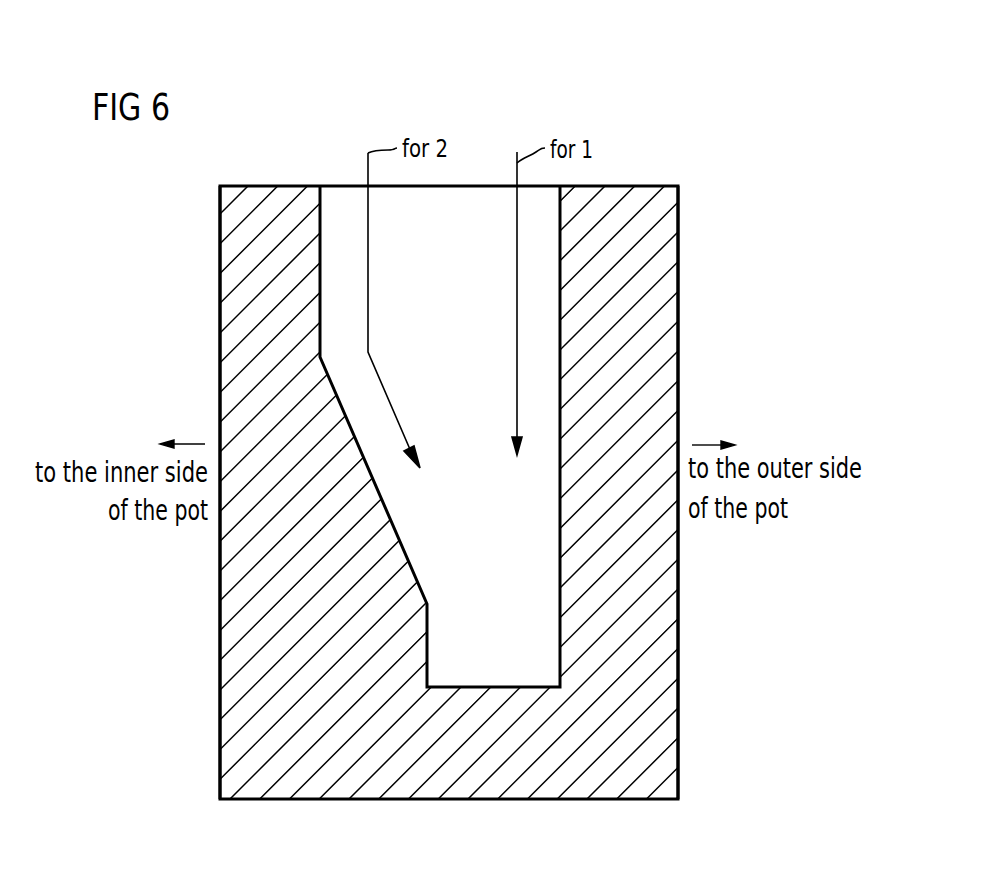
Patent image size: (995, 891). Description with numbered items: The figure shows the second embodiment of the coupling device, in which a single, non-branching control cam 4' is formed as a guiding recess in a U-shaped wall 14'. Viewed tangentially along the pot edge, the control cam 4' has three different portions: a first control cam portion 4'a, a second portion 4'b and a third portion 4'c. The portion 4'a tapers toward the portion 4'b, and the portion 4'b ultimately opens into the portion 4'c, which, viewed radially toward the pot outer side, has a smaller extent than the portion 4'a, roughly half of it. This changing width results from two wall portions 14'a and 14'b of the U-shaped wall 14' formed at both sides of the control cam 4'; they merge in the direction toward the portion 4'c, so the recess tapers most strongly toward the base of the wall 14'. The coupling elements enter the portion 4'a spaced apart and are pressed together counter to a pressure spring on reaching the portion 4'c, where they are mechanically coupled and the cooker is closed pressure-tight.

The U-shaped wall 14' is at (497, 521).
The wall portion 14'a is at (192, 492).
The wall portion 14'b is at (709, 492).
The control cam 4' is at (426, 436).
The first control cam portion 4'a is at (440, 272).
The second control cam portion 4'b is at (444, 480).
The third control cam portion 4'c is at (494, 645).